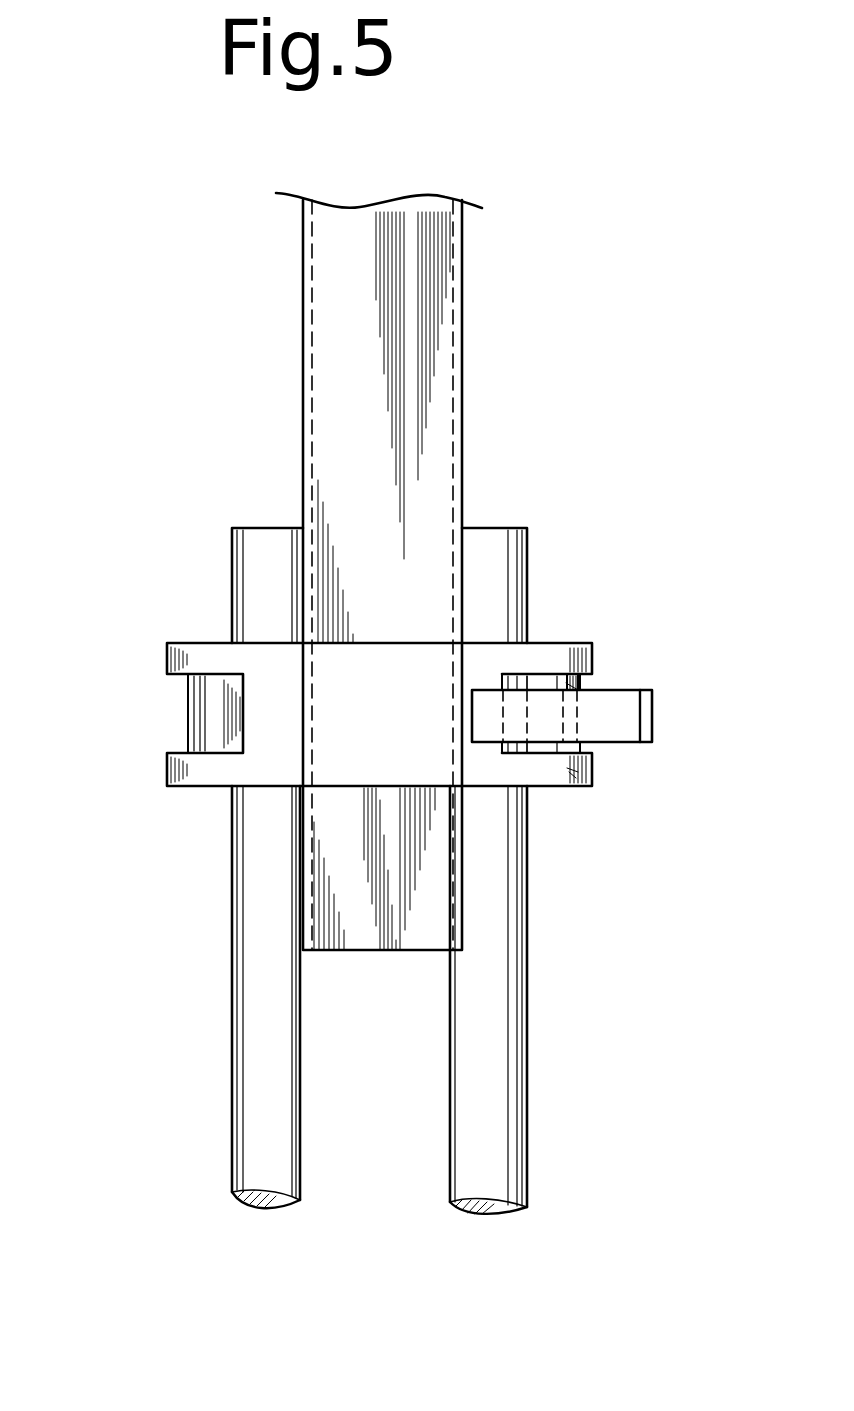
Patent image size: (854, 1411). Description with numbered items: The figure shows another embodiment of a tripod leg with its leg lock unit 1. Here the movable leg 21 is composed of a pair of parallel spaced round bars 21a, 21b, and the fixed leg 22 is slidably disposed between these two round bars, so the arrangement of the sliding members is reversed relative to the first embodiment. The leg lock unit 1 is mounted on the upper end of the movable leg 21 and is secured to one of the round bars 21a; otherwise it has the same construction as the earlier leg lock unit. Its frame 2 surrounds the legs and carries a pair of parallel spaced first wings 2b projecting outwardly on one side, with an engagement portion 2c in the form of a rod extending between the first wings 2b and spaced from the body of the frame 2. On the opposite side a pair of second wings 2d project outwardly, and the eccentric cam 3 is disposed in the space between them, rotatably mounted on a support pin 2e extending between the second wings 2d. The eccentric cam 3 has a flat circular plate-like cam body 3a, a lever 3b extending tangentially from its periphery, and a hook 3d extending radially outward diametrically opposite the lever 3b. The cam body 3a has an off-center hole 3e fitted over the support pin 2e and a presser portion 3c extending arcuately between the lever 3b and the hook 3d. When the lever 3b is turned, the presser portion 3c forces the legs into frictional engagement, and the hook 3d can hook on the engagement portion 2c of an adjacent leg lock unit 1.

The leg lock unit 1 is at (273, 783).
The frame 2 is at (392, 731).
The first wings 2b is at (198, 648).
The engagement portion 2c is at (188, 695).
The second wings 2d is at (565, 648).
The support pin 2e is at (573, 683).
The eccentric cam 3 is at (616, 814).
The cam body 3a is at (587, 735).
The lever 3b is at (480, 733).
The presser portion 3c is at (527, 722).
The hook 3d is at (625, 732).
The hole 3e is at (557, 722).
The movable leg 21 is at (443, 1277).
The round bar 21a is at (253, 543).
The round bar 21b is at (497, 567).
The fixed leg 22 is at (397, 217).